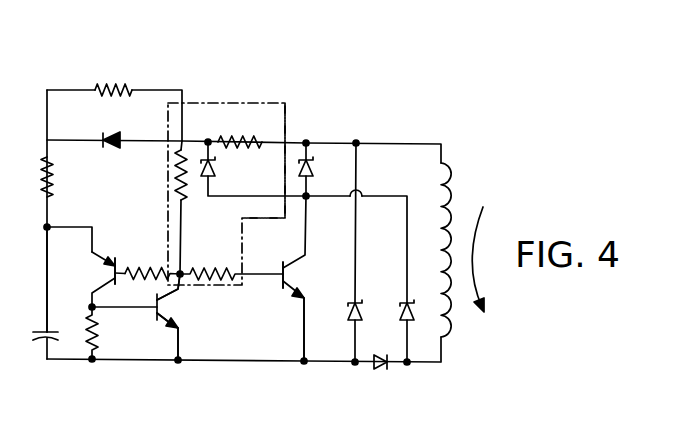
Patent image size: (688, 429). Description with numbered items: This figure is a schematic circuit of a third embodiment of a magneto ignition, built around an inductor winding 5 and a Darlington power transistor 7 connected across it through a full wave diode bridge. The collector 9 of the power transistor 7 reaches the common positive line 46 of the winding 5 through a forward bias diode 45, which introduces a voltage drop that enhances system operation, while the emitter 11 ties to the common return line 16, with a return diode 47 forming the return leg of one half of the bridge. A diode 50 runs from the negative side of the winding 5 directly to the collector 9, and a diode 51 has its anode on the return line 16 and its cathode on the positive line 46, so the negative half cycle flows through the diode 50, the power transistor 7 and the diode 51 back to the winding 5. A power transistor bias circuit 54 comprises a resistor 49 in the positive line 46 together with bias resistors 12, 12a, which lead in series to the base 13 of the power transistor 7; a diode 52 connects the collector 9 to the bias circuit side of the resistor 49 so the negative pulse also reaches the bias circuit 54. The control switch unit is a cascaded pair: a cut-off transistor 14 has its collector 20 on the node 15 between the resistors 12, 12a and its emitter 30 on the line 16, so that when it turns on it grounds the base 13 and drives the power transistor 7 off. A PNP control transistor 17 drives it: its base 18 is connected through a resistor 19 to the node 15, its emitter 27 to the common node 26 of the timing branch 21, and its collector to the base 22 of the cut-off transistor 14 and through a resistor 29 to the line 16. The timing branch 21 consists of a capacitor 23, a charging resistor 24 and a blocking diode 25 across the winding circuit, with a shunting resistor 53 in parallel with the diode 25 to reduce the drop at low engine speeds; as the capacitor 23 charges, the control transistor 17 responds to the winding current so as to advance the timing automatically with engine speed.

The inductor winding 5 is at (458, 338).
The Darlington power transistor 7 is at (318, 273).
The collector 9 is at (288, 262).
The emitter 11 is at (302, 312).
The bias resistor 12 is at (177, 173).
The bias resistor 12a is at (218, 268).
The base 13 is at (281, 268).
The cut-off transistor 14 is at (172, 311).
The node 15 is at (183, 266).
The common return line 16 is at (222, 361).
The control transistor 17 is at (104, 269).
The base 18 is at (118, 262).
The resistor 19 is at (145, 268).
The collector 20 is at (180, 290).
The timing branch 21 is at (47, 282).
The base 22 is at (155, 303).
The capacitor 23 is at (62, 320).
The charging resistor 24 is at (52, 170).
The blocking diode 25 is at (116, 130).
The common node 26 is at (50, 227).
The emitter 27 is at (104, 258).
The resistor 29 is at (95, 334).
The emitter 30 is at (173, 333).
The forward bias diode 45 is at (313, 170).
The common positive line 46 is at (330, 142).
The return diode 47 is at (382, 370).
The resistor 49 is at (240, 138).
The diode 50 is at (412, 306).
The diode 51 is at (360, 306).
The diode 52 is at (216, 169).
The shunting resistor 53 is at (105, 86).
The power transistor bias circuit 54 is at (276, 103).